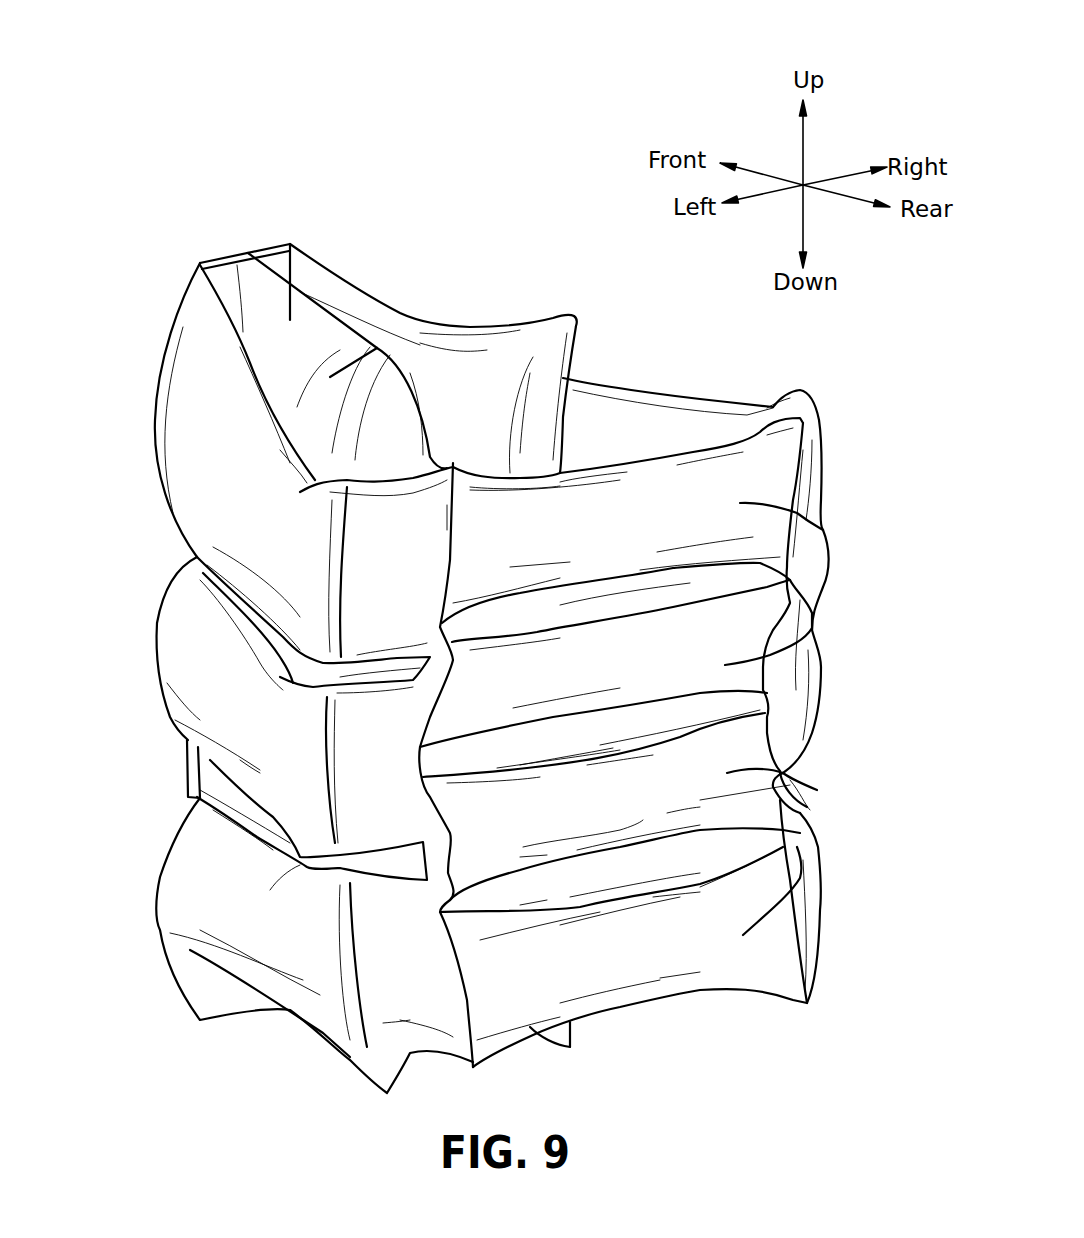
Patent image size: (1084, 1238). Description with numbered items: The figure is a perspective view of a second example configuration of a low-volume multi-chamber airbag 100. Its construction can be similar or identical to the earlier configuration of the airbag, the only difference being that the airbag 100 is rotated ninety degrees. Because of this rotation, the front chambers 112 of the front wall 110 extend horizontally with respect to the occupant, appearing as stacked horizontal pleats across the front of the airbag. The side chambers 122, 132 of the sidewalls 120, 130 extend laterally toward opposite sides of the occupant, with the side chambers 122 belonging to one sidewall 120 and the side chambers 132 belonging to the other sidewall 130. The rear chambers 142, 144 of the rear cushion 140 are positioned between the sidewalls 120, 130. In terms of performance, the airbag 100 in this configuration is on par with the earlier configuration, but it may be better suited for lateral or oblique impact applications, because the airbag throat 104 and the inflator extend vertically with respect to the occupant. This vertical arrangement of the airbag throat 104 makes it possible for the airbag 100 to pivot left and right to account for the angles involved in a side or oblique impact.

The airbag 100 is at (431, 200).
The airbag throat 104 is at (178, 277).
The front wall 110 is at (673, 1048).
The front chambers 112 is at (830, 550).
The sidewall 120 is at (620, 352).
The side chambers 122 is at (638, 427).
The sidewall 130 is at (150, 600).
The side chambers 132 is at (203, 430).
The rear cushion 140 is at (350, 278).
The rear chamber 142 is at (423, 343).
The rear chamber 144 is at (290, 275).